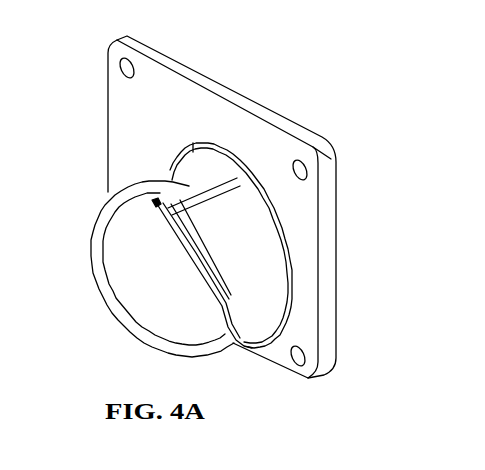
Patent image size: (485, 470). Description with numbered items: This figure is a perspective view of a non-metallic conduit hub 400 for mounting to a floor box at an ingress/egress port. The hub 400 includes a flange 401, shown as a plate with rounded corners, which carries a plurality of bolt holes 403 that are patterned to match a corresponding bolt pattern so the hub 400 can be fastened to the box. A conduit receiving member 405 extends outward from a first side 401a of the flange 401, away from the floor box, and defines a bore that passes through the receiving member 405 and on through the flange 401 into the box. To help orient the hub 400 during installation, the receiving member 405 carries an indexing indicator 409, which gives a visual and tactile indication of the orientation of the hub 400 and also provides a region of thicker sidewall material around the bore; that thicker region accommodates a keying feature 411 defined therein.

The hub 400 is at (92, 40).
The flange 401 is at (263, 207).
The first side 401a is at (306, 308).
The bolt holes 403 is at (300, 158).
The conduit receiving member 405 is at (230, 350).
The indexing indicator 409 is at (173, 178).
The keying feature 411 is at (150, 205).